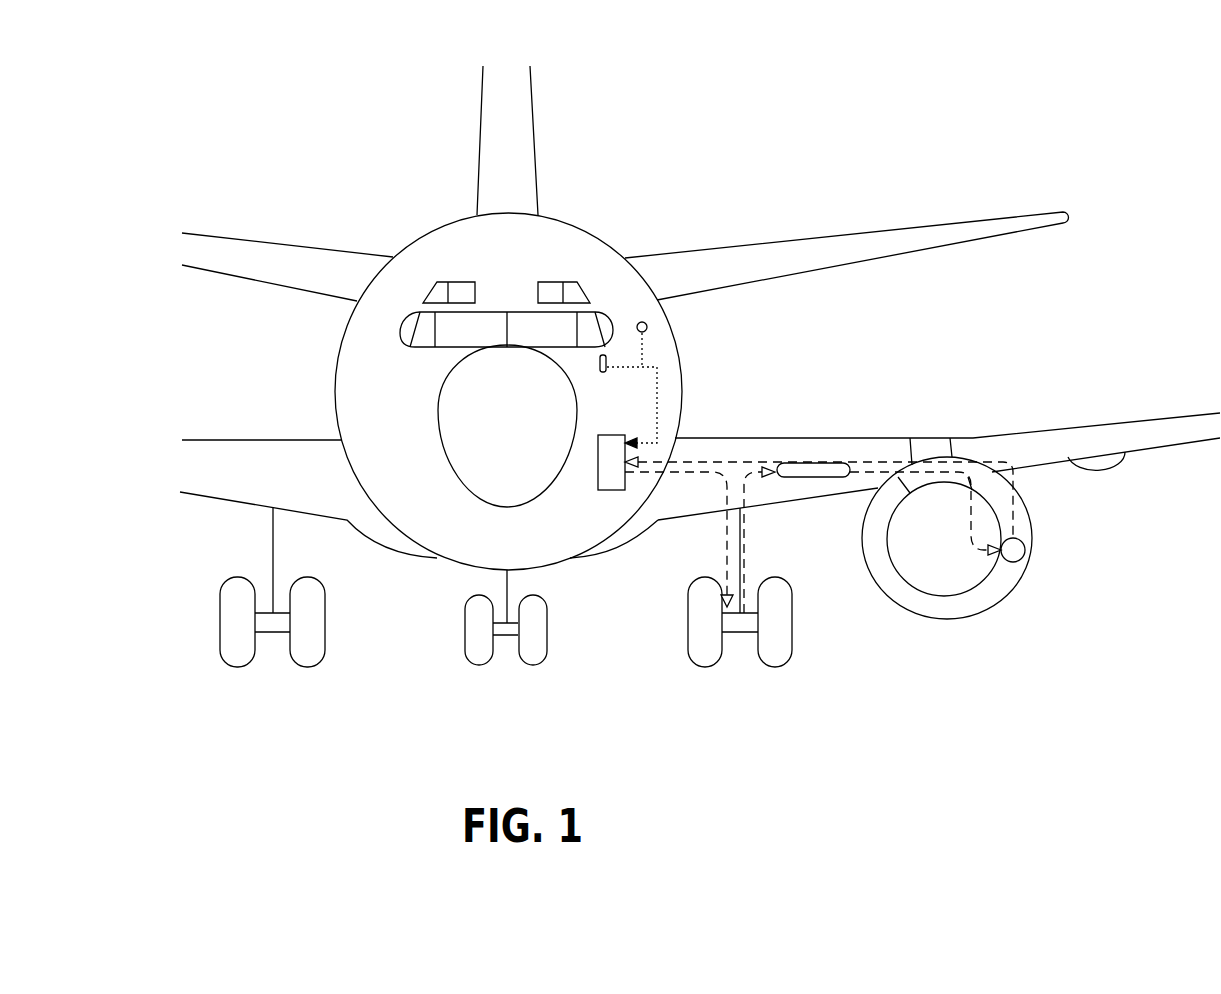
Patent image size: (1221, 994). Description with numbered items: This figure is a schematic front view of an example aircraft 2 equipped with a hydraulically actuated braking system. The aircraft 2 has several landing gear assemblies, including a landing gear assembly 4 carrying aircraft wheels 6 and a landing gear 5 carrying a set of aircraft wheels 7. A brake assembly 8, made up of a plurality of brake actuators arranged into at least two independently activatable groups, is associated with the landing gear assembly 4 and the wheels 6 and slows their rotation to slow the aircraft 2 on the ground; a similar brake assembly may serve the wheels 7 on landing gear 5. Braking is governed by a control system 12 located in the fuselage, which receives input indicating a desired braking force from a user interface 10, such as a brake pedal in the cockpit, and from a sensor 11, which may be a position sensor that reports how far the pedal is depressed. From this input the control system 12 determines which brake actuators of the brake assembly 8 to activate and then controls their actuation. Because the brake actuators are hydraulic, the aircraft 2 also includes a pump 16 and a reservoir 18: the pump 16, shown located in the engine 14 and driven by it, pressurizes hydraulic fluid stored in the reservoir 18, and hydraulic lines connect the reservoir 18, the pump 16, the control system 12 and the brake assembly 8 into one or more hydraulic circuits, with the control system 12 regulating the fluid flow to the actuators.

The aircraft 2 is at (648, 95).
The landing gear assembly 4 is at (740, 548).
The landing gear 5 is at (272, 550).
The aircraft wheels 6 is at (685, 670).
The aircraft wheels 7 is at (307, 670).
The brake assembly 8 is at (736, 640).
The user interface 10 is at (605, 352).
The sensor 11 is at (645, 321).
The control system 12 is at (613, 490).
The engine 14 is at (957, 612).
The pump 16 is at (1030, 578).
The reservoir 18 is at (798, 477).